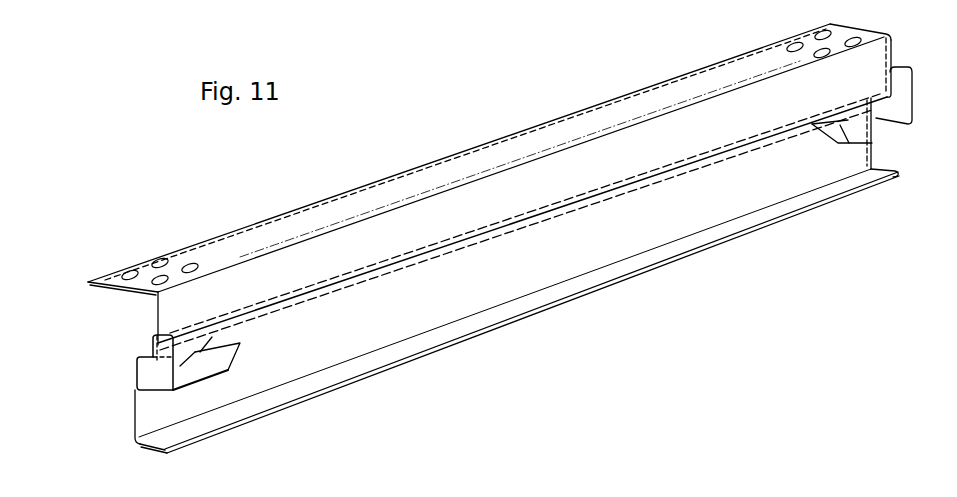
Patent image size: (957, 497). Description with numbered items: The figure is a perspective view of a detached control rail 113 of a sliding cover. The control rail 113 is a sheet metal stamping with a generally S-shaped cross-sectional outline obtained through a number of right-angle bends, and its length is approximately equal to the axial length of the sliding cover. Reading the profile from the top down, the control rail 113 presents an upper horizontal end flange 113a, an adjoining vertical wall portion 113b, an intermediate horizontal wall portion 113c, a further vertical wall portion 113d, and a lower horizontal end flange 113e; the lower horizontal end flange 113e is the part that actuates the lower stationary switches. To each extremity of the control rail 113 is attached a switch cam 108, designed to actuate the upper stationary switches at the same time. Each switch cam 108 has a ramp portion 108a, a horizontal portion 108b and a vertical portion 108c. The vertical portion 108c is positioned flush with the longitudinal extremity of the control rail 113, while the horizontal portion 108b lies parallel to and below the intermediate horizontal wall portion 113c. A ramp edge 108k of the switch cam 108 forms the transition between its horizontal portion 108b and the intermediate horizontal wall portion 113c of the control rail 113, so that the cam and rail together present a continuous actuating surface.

The control rail 113 is at (493, 238).
The upper horizontal end flange 113a is at (586, 122).
The vertical wall portion 113b is at (486, 193).
The intermediate horizontal wall portion 113c is at (652, 181).
The vertical wall portion 113d is at (582, 243).
The lower horizontal end flange 113e is at (652, 260).
The switch cam 108 is at (179, 372).
The ramp portion 108a is at (236, 343).
The horizontal portion 108b is at (215, 376).
The vertical portion 108c is at (147, 373).
The ramp edge 108k is at (218, 343).